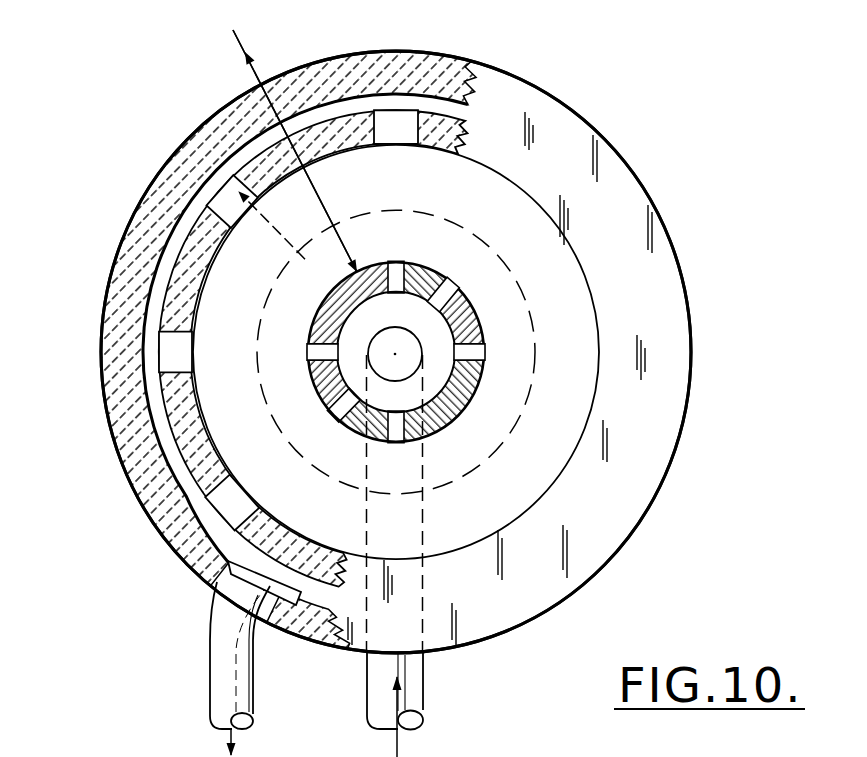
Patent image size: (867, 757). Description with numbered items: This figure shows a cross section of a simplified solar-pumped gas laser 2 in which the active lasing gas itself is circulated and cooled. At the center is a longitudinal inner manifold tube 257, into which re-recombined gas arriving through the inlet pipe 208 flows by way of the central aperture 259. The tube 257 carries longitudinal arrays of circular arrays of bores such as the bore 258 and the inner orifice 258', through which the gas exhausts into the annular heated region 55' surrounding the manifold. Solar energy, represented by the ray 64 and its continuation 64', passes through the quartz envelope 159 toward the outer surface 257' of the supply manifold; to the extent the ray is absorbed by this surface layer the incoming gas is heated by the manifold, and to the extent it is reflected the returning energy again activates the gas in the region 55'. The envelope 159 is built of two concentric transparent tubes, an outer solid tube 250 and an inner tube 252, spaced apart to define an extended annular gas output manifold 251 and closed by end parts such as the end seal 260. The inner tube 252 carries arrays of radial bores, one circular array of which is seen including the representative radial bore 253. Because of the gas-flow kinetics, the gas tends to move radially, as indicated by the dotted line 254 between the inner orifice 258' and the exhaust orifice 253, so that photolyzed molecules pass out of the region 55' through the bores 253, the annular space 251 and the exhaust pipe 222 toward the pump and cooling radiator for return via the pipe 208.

The disc 2 is at (645, 170).
The quartz envelope 159 is at (577, 112).
The end seal 260 is at (537, 490).
The solid tube 250 is at (208, 129).
The annular gas output manifold 251 is at (223, 173).
The inner tube 252 is at (183, 267).
The radial bore 253 is at (213, 203).
The dotted line 254 is at (273, 238).
The annular heated region 55' is at (419, 336).
The inner manifold tube 257 is at (434, 350).
The outer surface 257' is at (429, 272).
The bore 258 is at (518, 362).
The inner orifice 258' is at (270, 334).
The central aperture 259 is at (418, 357).
The ray 64 is at (260, 151).
The radial dimension line 64' is at (295, 151).
The inlet pipe 208 is at (425, 688).
The exhaust pipe 222 is at (212, 687).